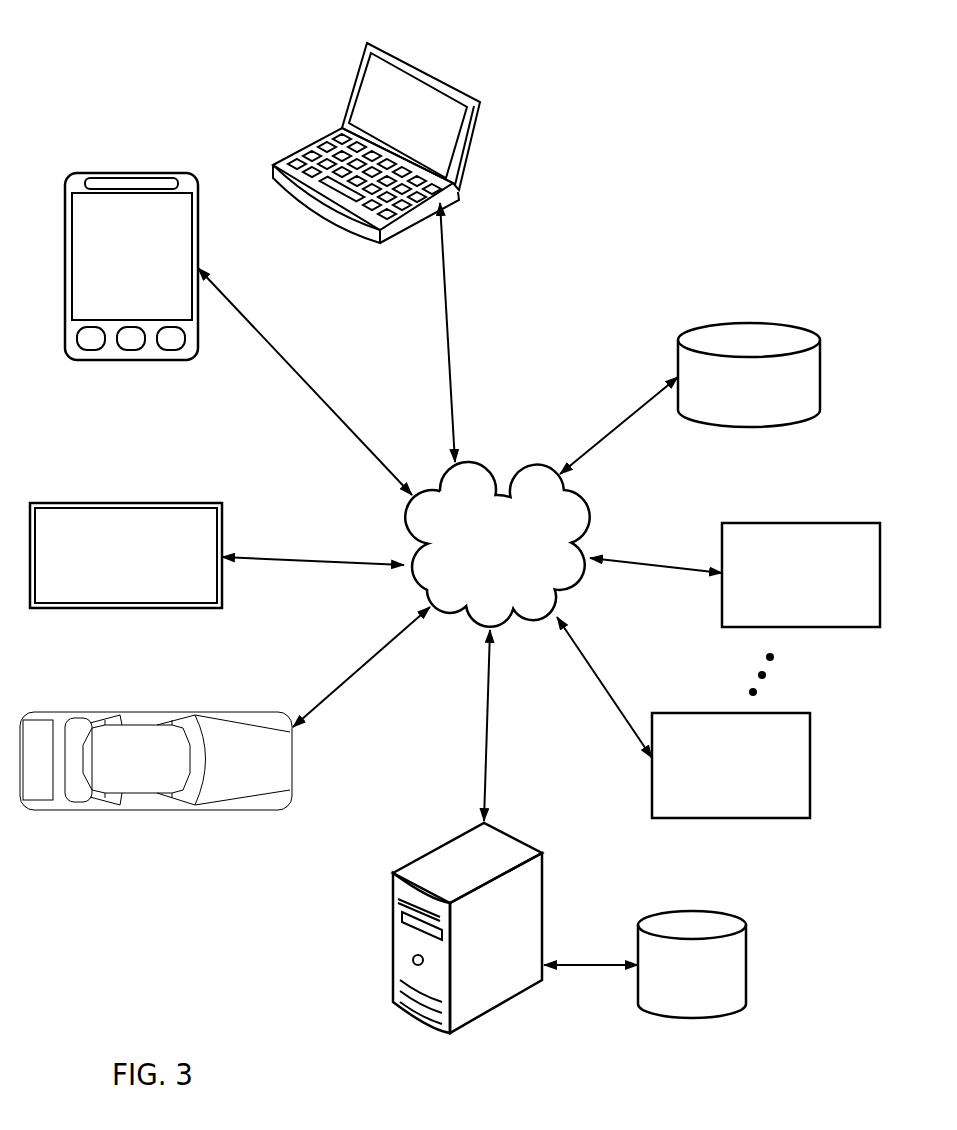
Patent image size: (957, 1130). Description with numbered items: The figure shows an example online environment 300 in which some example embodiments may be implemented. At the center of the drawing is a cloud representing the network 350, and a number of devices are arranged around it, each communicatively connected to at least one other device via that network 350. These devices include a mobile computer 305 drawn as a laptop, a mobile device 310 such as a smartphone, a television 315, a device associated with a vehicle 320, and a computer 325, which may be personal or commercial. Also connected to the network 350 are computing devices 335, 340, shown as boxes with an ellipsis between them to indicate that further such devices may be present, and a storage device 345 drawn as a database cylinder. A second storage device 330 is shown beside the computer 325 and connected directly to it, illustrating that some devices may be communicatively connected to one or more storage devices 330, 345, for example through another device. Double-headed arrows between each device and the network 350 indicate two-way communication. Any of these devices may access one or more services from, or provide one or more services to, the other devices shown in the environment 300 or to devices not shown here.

The environment 300 is at (150, 42).
The mobile computer 305 is at (376, 143).
The mobile device 310 is at (131, 266).
The television 315 is at (126, 555).
The device associated with a vehicle 320 is at (156, 761).
The computer 325 is at (467, 928).
The storage device 330 is at (692, 964).
The computing device 335 is at (731, 765).
The computing device 340 is at (801, 575).
The storage device 345 is at (749, 375).
The network 350 is at (497, 544).